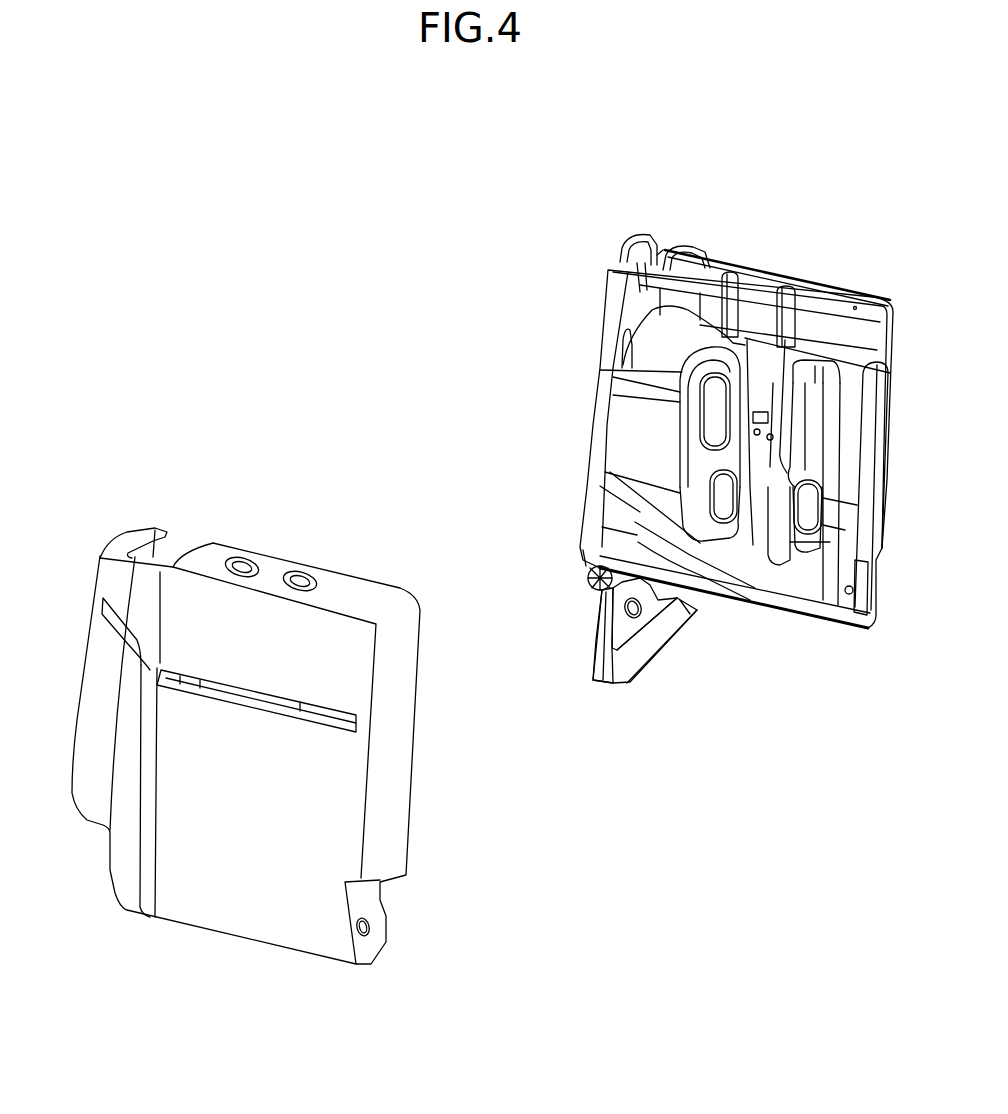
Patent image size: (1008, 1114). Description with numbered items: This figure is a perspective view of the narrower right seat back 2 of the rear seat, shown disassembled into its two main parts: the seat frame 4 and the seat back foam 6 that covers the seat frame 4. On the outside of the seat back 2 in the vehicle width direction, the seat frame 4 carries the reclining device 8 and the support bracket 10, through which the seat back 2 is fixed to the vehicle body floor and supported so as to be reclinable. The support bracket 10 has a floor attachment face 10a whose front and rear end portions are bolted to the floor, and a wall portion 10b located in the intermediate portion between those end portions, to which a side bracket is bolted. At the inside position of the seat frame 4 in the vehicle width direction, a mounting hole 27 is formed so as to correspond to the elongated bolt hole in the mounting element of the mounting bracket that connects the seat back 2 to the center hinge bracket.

The right seat back 2 is at (467, 450).
The seat frame 4 is at (763, 270).
The seat back foam 6 is at (126, 541).
The reclining device 8 is at (590, 585).
The support bracket 10 is at (612, 648).
The floor attachment face 10a is at (633, 660).
The wall portion 10b is at (625, 628).
The mounting hole 27 is at (847, 622).